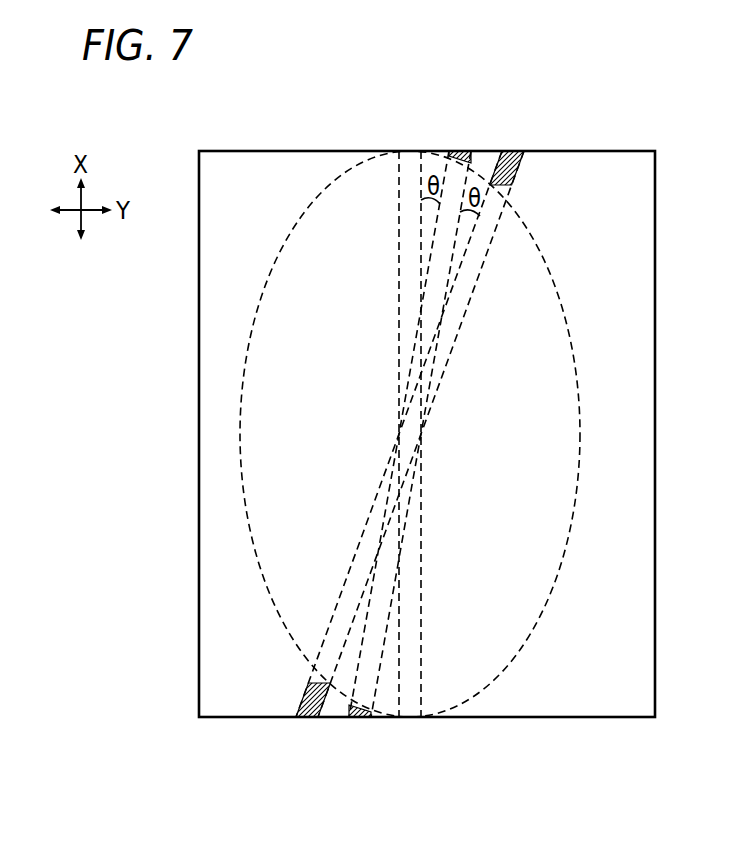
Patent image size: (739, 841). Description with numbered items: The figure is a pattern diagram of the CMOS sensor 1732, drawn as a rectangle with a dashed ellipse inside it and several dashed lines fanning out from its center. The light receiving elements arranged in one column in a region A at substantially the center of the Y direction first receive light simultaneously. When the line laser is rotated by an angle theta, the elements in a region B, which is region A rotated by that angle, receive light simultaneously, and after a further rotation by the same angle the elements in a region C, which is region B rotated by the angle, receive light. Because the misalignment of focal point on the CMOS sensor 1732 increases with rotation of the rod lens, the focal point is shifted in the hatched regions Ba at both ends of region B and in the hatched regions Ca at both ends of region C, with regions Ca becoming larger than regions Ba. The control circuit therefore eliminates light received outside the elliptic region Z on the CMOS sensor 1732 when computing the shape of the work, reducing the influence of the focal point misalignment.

The CMOS sensor 1732 is at (164, 327).
The elliptic region Z is at (555, 285).
The region A is at (399, 177).
The region B is at (421, 219).
The region C is at (485, 260).
The regions Ba is at (458, 150).
The regions Ca is at (515, 150).